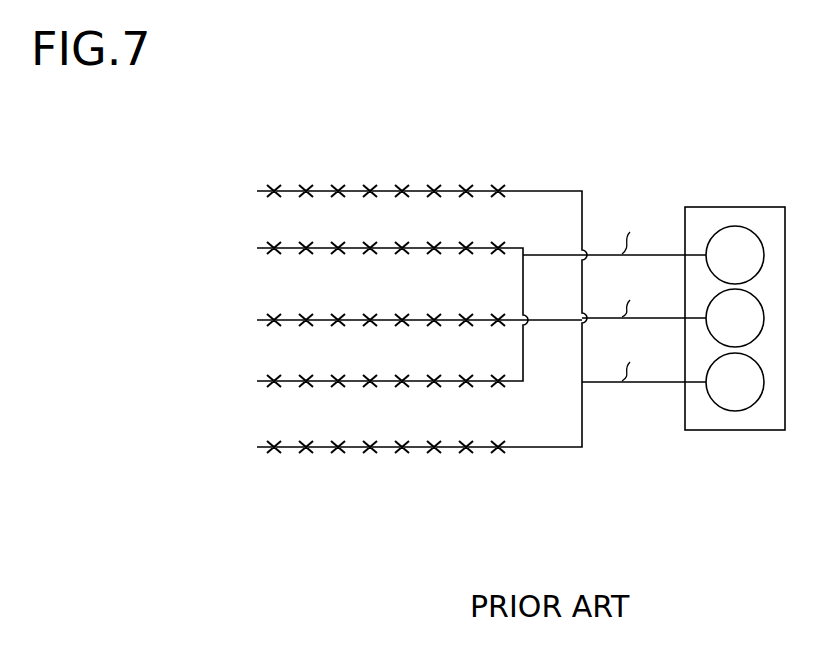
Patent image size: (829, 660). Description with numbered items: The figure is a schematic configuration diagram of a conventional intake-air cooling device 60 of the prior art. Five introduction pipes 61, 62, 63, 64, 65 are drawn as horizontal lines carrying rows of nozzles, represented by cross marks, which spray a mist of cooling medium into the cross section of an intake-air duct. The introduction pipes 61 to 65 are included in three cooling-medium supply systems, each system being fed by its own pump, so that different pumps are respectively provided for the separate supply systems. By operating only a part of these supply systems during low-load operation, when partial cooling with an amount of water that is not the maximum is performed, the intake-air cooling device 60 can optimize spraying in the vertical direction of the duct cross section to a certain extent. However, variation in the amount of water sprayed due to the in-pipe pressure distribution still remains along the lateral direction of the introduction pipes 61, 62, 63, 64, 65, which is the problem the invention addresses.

The intake-air cooling device 60 is at (677, 141).
The introduction pipe 61 is at (524, 189).
The introduction pipe 62 is at (513, 247).
The introduction pipe 63 is at (515, 317).
The introduction pipe 64 is at (513, 383).
The introduction pipe 65 is at (526, 449).